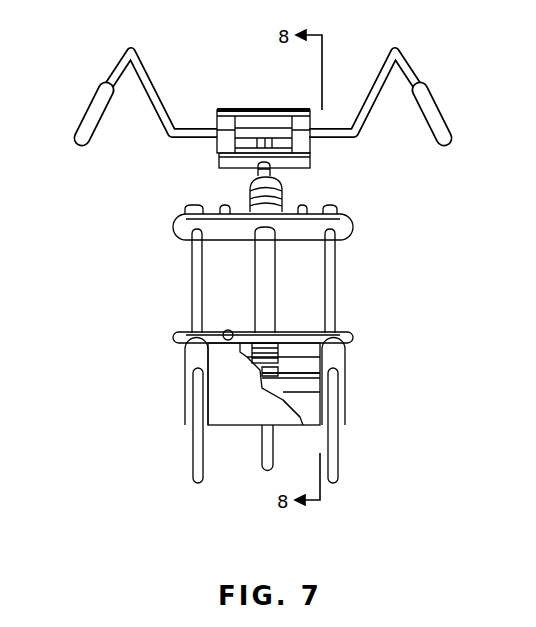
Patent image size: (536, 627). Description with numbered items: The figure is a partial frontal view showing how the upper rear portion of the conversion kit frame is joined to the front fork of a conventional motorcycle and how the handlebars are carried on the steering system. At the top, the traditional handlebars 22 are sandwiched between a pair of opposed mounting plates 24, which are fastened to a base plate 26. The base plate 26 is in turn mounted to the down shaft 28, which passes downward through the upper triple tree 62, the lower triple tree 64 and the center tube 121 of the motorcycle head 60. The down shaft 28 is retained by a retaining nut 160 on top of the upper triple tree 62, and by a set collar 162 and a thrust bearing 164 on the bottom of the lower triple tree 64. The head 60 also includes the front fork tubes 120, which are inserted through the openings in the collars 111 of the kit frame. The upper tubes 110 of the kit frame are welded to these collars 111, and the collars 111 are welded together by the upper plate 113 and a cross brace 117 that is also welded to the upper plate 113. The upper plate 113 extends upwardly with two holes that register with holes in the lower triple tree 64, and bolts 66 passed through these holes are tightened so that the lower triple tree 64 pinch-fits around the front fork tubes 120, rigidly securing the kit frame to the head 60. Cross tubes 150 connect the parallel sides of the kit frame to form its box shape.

The handlebars 22 is at (171, 137).
The mounting plates 24 is at (228, 147).
The base plate 26 is at (233, 165).
The down shaft 28 is at (259, 460).
The head 60 is at (140, 262).
The upper triple tree 62 is at (337, 224).
The lower triple tree 64 is at (343, 338).
The bolts 66 is at (230, 333).
The upper tubes 110 is at (332, 448).
The collars 111 is at (192, 367).
The upper plate 113 is at (247, 420).
The cross brace 117 is at (305, 411).
The front fork tubes 120 is at (330, 275).
The center tube 121 is at (263, 278).
The cross tubes 150 is at (283, 192).
The retaining nut 160 is at (274, 170).
The set collar 162 is at (309, 388).
The thrust bearing 164 is at (254, 347).